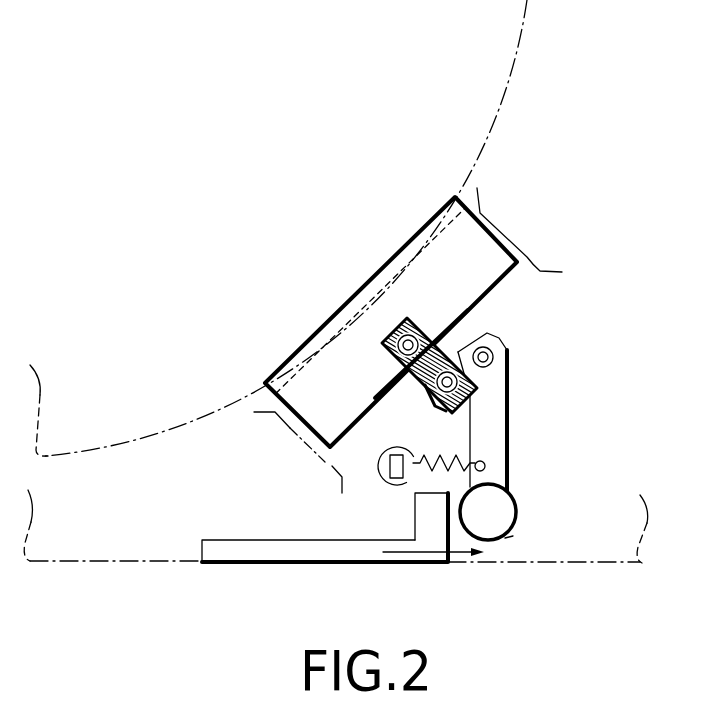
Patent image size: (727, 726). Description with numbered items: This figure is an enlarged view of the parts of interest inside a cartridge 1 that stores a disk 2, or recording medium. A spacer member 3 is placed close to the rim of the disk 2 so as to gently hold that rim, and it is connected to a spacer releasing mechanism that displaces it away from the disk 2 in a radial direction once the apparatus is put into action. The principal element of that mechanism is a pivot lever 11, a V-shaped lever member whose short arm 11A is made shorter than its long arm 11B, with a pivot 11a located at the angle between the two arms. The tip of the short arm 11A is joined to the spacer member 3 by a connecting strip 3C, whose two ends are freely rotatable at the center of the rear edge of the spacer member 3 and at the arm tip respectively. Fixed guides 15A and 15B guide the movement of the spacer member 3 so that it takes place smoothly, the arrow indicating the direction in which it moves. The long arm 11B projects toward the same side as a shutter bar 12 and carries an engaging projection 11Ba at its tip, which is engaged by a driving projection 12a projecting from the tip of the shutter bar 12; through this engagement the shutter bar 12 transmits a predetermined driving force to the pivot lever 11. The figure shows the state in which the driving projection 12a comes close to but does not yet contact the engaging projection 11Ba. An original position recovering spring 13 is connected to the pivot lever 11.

The cartridge 1 is at (83, 560).
The disk 2 is at (519, 66).
The spacer member 3 is at (464, 236).
The connecting strip 3C is at (443, 414).
The pivot lever 11 is at (507, 424).
The short arm 11A is at (460, 352).
The pivot 11a is at (494, 357).
The long arm 11B is at (500, 474).
The engaging projection 11Ba is at (513, 536).
The shutter bar 12 is at (217, 552).
The driving projection 12a is at (413, 524).
The original position recovering spring 13 is at (432, 456).
The fixed guide 15A is at (340, 475).
The fixed guide 15B is at (528, 257).